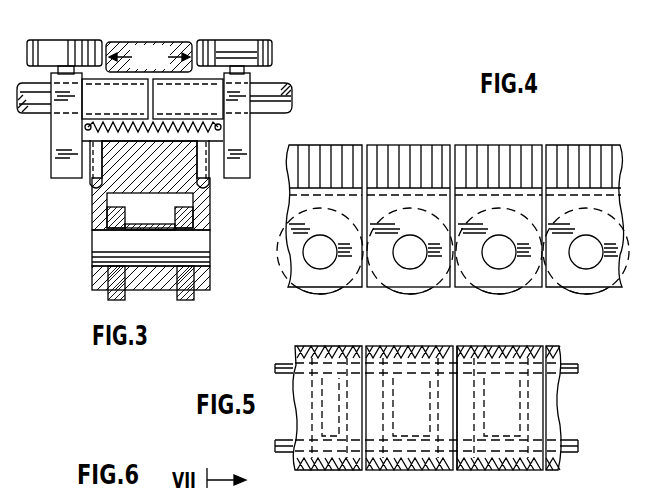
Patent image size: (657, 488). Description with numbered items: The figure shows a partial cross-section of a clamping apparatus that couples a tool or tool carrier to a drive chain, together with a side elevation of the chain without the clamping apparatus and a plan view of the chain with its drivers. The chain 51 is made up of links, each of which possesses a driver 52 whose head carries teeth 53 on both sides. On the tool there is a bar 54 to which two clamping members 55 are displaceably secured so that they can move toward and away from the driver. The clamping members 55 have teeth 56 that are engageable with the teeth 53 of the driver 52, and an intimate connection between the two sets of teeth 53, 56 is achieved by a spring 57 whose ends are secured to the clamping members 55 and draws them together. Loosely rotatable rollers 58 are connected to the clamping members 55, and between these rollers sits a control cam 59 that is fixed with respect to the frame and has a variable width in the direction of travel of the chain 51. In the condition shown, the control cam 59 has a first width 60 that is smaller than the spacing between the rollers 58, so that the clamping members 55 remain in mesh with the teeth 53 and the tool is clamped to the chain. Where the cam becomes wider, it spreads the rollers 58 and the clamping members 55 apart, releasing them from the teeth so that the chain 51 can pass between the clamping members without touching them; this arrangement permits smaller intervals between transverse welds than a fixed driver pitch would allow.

In FIG. 3, the chain 51 is at (194, 297).
In FIG. 4, the chain 51 is at (592, 297).
In FIG. 5, the chain 51 is at (290, 364).
In FIG. 3, the driver 52 is at (204, 214).
In FIG. 4, the driver 52 is at (410, 146).
In FIG. 5, the driver 52 is at (422, 347).
In FIG. 3, the teeth 53 is at (92, 183).
In FIG. 4, the teeth 53 is at (504, 151).
In FIG. 5, the teeth 53 is at (492, 350).
In FIG. 3, the bar 54 is at (276, 98).
In FIG. 3, the clamping members 55 is at (56, 138).
In FIG. 3, the teeth 56 is at (92, 166).
In FIG. 3, the spring 57 is at (122, 126).
In FIG. 3, the rollers 58 is at (287, 52).
In FIG. 3, the control cam 59 is at (168, 64).
In FIG. 3, the width 60 is at (149, 57).